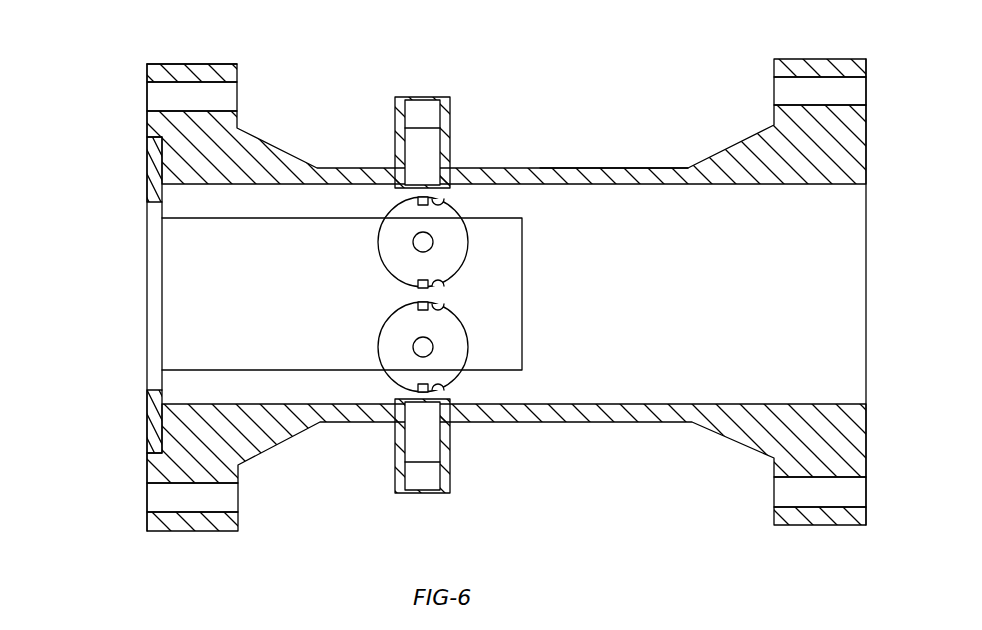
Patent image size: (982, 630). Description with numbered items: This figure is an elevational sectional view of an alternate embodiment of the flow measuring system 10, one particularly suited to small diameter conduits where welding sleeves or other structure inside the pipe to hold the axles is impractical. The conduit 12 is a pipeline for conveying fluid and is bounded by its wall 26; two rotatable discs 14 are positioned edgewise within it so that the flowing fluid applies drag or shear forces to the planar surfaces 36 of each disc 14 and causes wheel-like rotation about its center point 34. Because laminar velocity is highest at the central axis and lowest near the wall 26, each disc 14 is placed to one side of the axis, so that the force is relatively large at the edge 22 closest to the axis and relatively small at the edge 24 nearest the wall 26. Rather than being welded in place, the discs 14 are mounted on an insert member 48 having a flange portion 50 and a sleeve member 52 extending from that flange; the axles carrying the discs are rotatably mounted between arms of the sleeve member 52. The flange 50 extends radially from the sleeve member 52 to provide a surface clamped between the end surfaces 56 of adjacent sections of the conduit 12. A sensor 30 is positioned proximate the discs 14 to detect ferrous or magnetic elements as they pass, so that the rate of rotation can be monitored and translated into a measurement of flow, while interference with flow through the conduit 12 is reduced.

The system 10 is at (474, 90).
The conduit 12 is at (548, 167).
The rotatable disc 14 is at (414, 292).
The edge 22 is at (440, 302).
The edge 24 is at (430, 238).
The wall 26 is at (637, 187).
The sensor 30 is at (398, 119).
The center point 34 is at (442, 208).
The planar surface 36 is at (397, 217).
The insert member 48 is at (139, 297).
The flange portion 50 is at (147, 180).
The sleeve member 52 is at (532, 242).
The end surface 56 is at (147, 125).